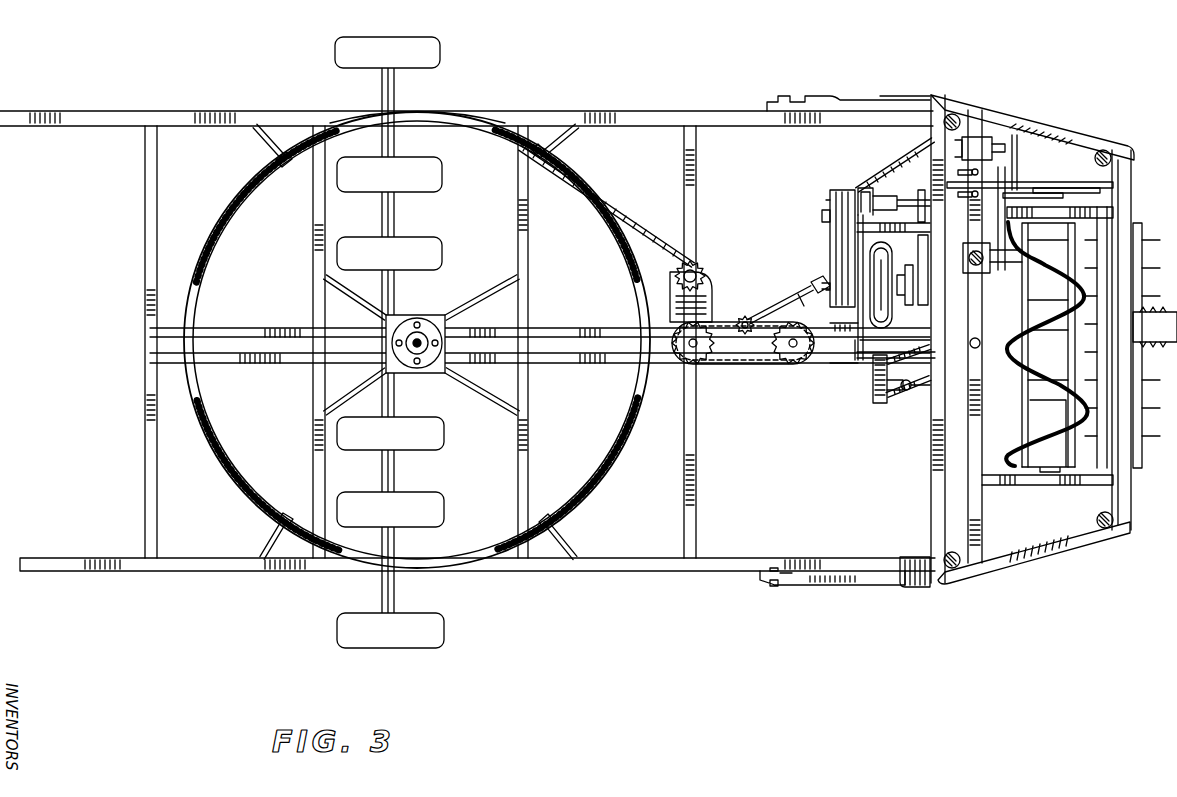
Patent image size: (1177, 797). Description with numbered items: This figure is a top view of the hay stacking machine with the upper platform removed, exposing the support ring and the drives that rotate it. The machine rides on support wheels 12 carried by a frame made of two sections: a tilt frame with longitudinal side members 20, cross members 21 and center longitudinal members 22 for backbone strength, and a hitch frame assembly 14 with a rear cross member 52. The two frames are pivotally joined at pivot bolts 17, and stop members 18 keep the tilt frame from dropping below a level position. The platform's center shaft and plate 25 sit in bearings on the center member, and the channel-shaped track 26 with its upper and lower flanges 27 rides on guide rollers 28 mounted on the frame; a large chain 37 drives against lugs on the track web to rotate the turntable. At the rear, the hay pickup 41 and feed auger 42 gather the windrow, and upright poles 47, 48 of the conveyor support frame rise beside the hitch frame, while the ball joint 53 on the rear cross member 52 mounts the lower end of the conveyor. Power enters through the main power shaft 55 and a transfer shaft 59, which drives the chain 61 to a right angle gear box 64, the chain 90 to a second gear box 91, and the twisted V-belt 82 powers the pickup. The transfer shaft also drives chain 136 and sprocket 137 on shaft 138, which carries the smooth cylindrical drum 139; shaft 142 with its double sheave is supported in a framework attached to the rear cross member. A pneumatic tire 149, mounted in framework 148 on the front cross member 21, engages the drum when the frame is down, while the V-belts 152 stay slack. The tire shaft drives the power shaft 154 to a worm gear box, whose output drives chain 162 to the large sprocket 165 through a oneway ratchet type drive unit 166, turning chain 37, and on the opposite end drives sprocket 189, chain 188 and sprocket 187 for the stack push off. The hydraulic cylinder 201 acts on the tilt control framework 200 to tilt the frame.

The support wheels 12 is at (446, 56).
The hitch frame assembly 14 is at (1072, 552).
The pivot bolts 17 is at (772, 590).
The stop members 18 is at (930, 100).
The side members 20 is at (610, 113).
The cross members 21 is at (145, 412).
The center longitudinal members 22 is at (277, 330).
The center shaft and plate 25 is at (437, 315).
The track 26 is at (305, 125).
The flanges 27 is at (462, 118).
The guide rollers 28 is at (286, 168).
The chain 37 is at (638, 210).
The hay pickup 41 is at (1143, 226).
The feed auger 42 is at (1032, 467).
The upright pole 47 is at (1110, 156).
The upright pole 48 is at (960, 116).
The rear cross member 52 is at (978, 530).
The ball joint 53 is at (975, 343).
The main power shaft 55 is at (1156, 355).
The transfer shaft 59 is at (1060, 182).
The chain 61 is at (1016, 175).
The gear box 64 is at (992, 137).
The V-belt 82 is at (1090, 187).
The chain 90 is at (1008, 235).
The gear box 91 is at (1008, 267).
The chain 136 is at (953, 185).
The sprocket 137 is at (903, 198).
The shaft 138 is at (960, 284).
The cylindrical drum 139 is at (862, 366).
The shaft 142 is at (878, 192).
The framework 148 is at (818, 366).
The pneumatic tire 149 is at (870, 252).
The V-belts 152 is at (830, 215).
The power shaft 154 is at (768, 305).
The chain 162 is at (715, 310).
The large sprocket 165 is at (700, 262).
The oneway ratchet type drive unit 166 is at (675, 275).
The sprocket 187 is at (795, 365).
The chain 188 is at (735, 365).
The sprocket 189 is at (690, 365).
The tilt control framework 200 is at (880, 404).
The hydraulic cylinder 201 is at (915, 392).